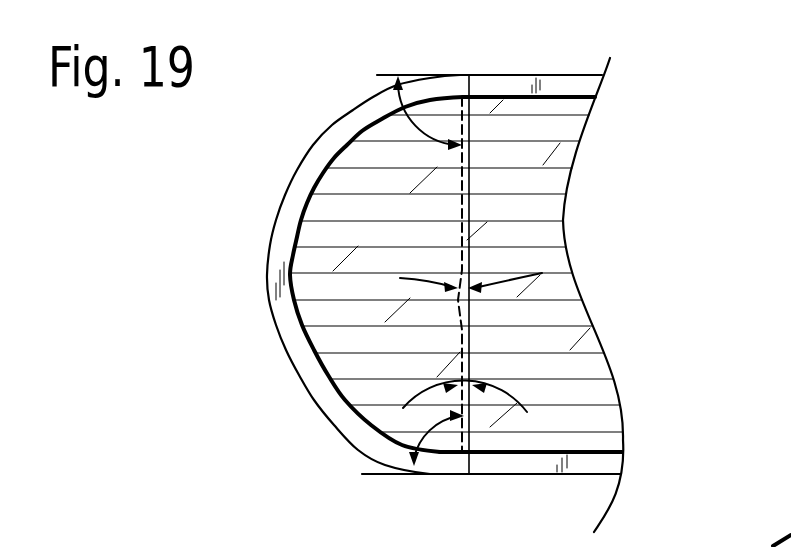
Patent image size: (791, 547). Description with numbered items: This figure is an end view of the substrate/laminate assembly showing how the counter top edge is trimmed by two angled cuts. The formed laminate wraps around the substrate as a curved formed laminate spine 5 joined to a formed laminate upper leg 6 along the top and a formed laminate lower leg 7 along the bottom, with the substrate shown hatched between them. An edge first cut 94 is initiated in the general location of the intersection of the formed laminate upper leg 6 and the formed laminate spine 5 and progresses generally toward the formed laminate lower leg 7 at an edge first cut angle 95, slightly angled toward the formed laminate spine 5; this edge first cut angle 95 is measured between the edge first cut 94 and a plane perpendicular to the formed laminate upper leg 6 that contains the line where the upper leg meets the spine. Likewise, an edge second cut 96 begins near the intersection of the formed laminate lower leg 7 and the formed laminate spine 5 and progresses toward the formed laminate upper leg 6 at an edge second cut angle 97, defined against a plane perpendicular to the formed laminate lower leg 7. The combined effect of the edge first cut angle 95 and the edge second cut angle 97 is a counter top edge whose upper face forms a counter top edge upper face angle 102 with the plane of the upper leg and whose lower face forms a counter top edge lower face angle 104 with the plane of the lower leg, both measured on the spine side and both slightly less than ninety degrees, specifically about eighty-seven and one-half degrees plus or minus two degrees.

The formed laminate spine 5 is at (268, 272).
The formed laminate upper leg 6 is at (510, 75).
The formed laminate lower leg 7 is at (548, 475).
The edge first cut 94 is at (458, 235).
The edge first cut angle 95 is at (507, 280).
The edge second cut 96 is at (460, 368).
The edge second cut angle 97 is at (503, 395).
The counter top edge upper face angle 102 is at (418, 128).
The counter top edge lower face angle 104 is at (425, 428).